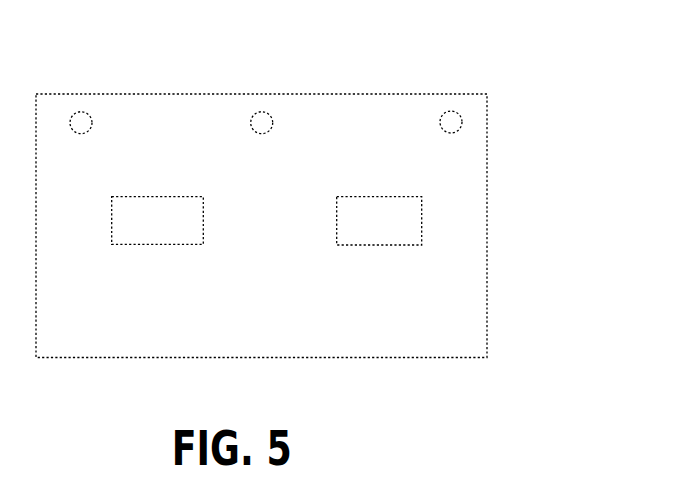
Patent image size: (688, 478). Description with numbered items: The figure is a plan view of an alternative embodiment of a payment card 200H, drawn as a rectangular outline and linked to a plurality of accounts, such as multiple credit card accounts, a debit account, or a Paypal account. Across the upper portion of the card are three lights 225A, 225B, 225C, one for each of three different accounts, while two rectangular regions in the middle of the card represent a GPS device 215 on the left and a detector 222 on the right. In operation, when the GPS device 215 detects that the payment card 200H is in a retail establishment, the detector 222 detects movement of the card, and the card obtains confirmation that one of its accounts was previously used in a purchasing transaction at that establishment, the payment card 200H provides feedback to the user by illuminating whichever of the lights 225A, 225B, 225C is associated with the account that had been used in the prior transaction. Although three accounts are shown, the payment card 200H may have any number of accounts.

The payment card 200H is at (477, 338).
The light 225A is at (86, 119).
The light 225B is at (263, 120).
The light 225C is at (453, 120).
The GPS device 215 is at (161, 227).
The detector 222 is at (370, 230).